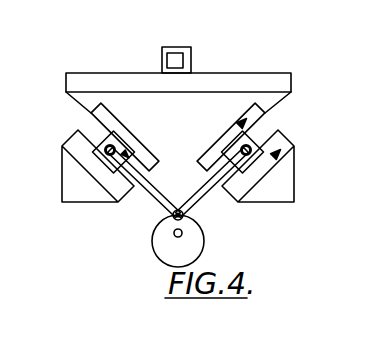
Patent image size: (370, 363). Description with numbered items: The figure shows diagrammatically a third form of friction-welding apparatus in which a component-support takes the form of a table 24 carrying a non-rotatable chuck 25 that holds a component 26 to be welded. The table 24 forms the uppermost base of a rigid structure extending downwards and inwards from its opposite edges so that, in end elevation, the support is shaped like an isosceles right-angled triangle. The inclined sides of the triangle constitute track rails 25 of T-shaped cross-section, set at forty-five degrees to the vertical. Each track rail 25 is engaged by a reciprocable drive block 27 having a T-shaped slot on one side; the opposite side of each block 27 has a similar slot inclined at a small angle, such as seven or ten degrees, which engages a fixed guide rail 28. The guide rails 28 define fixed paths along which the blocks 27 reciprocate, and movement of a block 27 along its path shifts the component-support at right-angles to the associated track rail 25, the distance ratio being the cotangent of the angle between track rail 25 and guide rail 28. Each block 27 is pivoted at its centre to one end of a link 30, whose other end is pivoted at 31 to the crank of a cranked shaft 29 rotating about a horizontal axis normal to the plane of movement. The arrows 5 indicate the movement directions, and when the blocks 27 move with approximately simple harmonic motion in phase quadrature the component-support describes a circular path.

The table 24 is at (255, 78).
The track rail 25 is at (192, 52).
The component 26 is at (179, 55).
The block 27 is at (228, 141).
The guide rail 28 is at (62, 156).
The cranked shaft 29 is at (176, 235).
The link 30 is at (147, 191).
The pivot 31 is at (204, 235).
The direction arrows 5 is at (241, 122).